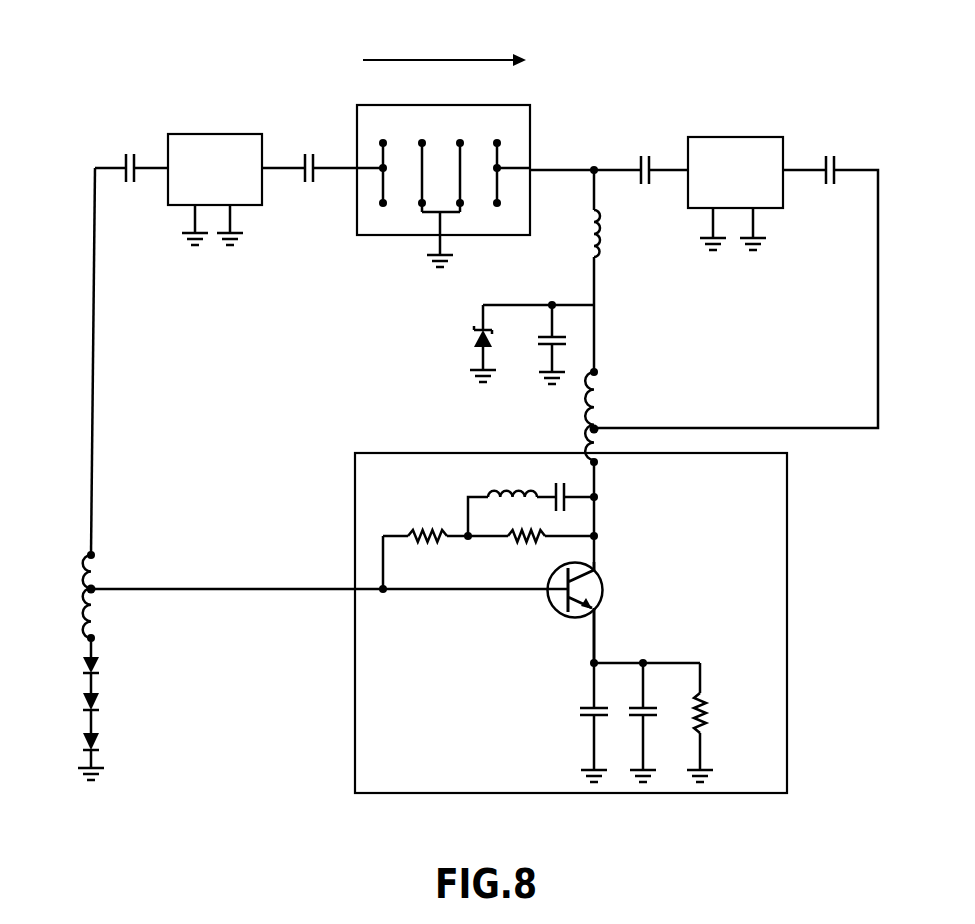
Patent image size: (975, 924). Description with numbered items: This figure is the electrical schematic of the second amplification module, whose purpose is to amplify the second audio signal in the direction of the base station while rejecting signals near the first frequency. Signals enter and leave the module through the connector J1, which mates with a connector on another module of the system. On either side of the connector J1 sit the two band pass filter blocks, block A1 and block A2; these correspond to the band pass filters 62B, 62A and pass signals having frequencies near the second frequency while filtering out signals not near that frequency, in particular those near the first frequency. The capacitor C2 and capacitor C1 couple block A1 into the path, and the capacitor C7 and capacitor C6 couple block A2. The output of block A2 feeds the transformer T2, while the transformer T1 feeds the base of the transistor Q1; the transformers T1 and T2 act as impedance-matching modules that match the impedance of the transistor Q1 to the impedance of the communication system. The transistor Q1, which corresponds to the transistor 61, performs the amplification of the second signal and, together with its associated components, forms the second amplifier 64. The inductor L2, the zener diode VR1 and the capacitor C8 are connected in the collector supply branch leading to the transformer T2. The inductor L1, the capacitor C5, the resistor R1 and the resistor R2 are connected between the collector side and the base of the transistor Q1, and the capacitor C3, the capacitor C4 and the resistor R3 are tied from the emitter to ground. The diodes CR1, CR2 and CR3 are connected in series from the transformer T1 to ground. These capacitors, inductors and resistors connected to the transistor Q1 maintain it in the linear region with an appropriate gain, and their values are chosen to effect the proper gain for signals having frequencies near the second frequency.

The band pass filter 62B is at (215, 146).
The band pass filter 62A is at (735, 145).
The transistor 61 is at (628, 611).
The second amplifier 64 is at (493, 623).
The band pass filter block A1 is at (208, 124).
The band pass filter block A2 is at (738, 126).
The connector J1 is at (443, 160).
The capacitor C1 is at (312, 153).
The capacitor C2 is at (130, 153).
The capacitor C3 is at (571, 722).
The capacitor C4 is at (631, 722).
The capacitor C5 is at (562, 484).
The capacitor C6 is at (832, 154).
The capacitor C7 is at (648, 154).
The capacitor C8 is at (539, 344).
The inductor L1 is at (512, 479).
The inductor L2 is at (577, 233).
The resistor R1 is at (427, 522).
The resistor R2 is at (526, 524).
The resistor R3 is at (716, 722).
The transformer T1 is at (80, 597).
The transformer T2 is at (582, 423).
The transistor Q1 is at (598, 611).
The zener diode VR1 is at (457, 343).
The diode CR1 is at (60, 665).
The diode CR2 is at (60, 703).
The diode CR3 is at (60, 743).